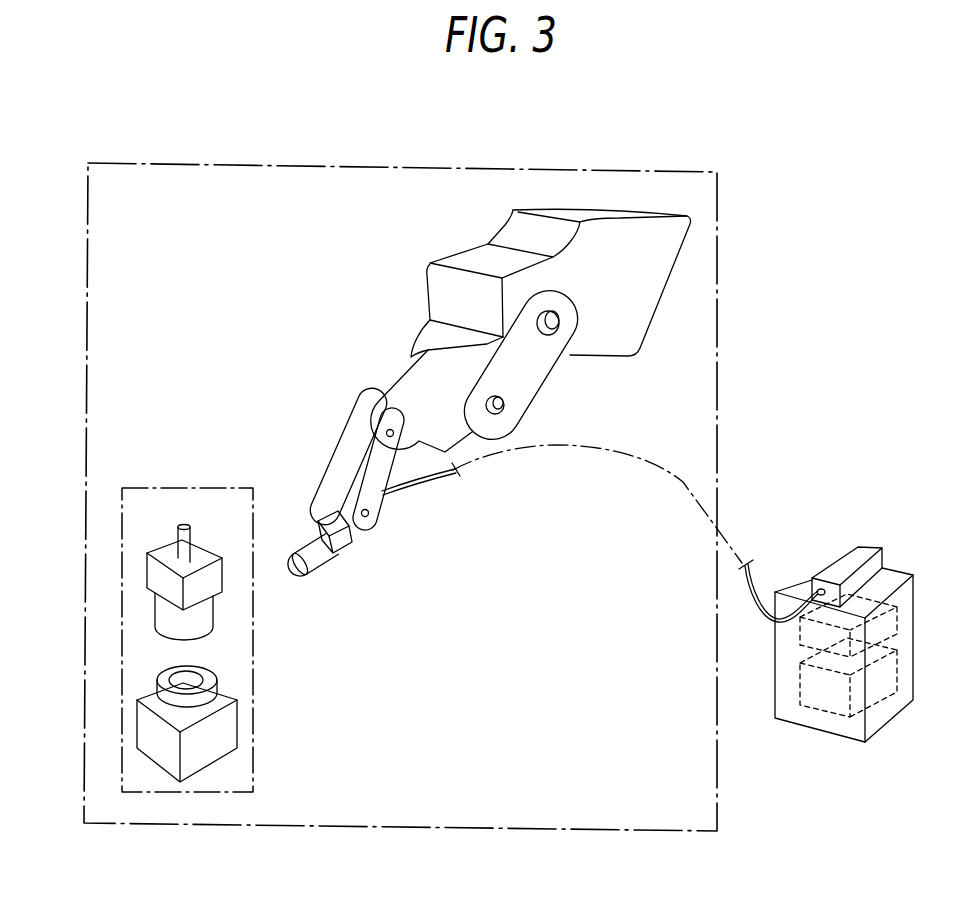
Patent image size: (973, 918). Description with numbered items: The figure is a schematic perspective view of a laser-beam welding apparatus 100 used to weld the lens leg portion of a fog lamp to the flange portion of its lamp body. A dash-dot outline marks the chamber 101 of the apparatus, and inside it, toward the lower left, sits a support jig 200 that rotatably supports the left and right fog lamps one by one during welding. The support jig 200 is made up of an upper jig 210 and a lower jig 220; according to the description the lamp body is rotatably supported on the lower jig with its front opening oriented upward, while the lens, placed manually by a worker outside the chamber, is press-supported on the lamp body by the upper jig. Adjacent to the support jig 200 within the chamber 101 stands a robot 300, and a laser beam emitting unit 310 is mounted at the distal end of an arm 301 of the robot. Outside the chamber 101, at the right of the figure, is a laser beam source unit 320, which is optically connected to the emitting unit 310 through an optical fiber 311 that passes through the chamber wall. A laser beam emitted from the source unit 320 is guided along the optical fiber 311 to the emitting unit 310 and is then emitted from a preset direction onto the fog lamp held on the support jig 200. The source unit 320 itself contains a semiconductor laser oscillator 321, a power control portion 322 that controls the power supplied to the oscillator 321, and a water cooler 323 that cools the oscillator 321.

The laser-beam welding apparatus 100 is at (206, 138).
The chamber 101 is at (638, 167).
The support jig 200 is at (205, 793).
The upper jig 210 is at (130, 709).
The lower jig 220 is at (142, 580).
The robot 300 is at (653, 283).
The arm 301 is at (310, 536).
The laser beam emitting unit 310 is at (317, 566).
The optical fiber 311 is at (420, 486).
The laser beam source unit 320 is at (811, 729).
The semiconductor laser oscillator 321 is at (853, 550).
The power control portion 322 is at (893, 613).
The water cooler 323 is at (898, 677).